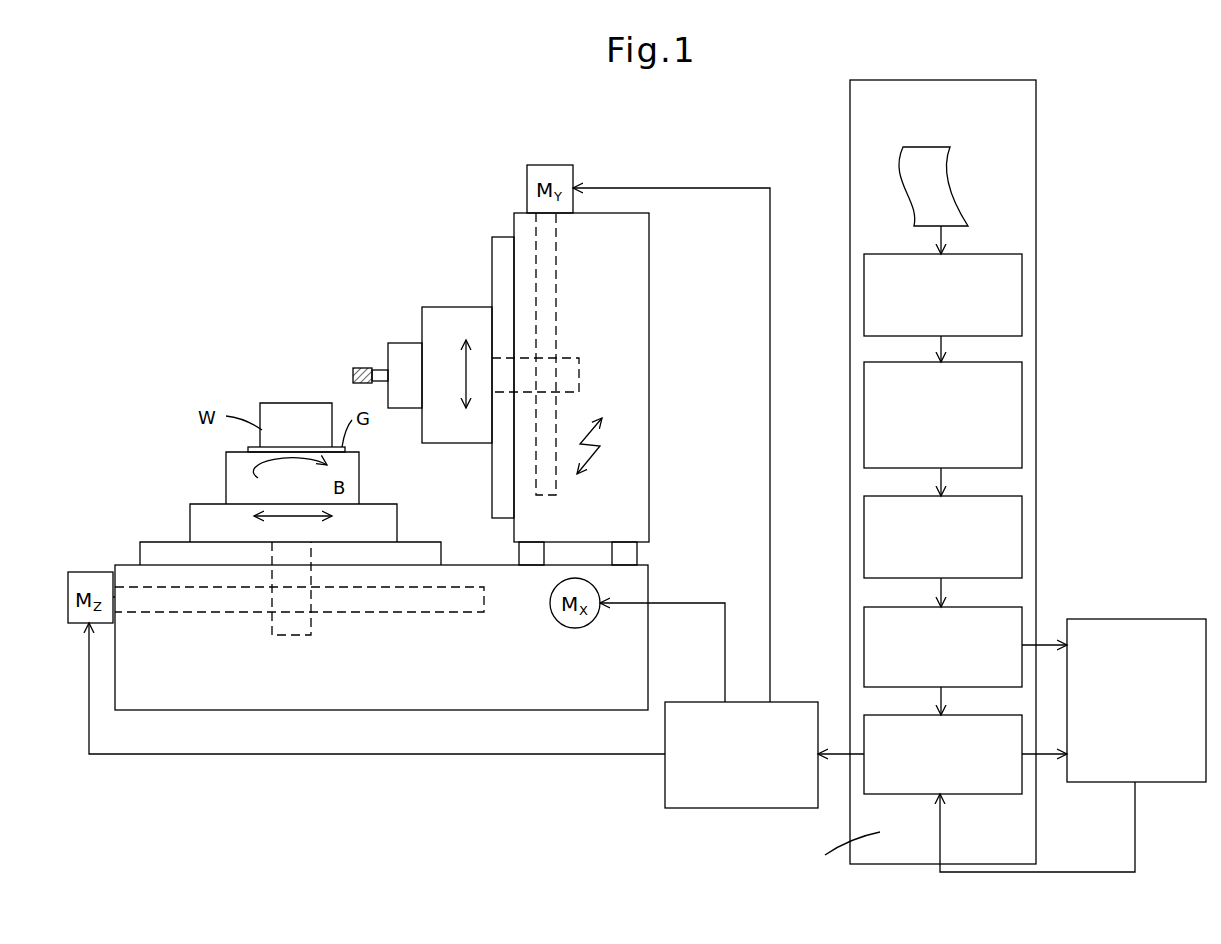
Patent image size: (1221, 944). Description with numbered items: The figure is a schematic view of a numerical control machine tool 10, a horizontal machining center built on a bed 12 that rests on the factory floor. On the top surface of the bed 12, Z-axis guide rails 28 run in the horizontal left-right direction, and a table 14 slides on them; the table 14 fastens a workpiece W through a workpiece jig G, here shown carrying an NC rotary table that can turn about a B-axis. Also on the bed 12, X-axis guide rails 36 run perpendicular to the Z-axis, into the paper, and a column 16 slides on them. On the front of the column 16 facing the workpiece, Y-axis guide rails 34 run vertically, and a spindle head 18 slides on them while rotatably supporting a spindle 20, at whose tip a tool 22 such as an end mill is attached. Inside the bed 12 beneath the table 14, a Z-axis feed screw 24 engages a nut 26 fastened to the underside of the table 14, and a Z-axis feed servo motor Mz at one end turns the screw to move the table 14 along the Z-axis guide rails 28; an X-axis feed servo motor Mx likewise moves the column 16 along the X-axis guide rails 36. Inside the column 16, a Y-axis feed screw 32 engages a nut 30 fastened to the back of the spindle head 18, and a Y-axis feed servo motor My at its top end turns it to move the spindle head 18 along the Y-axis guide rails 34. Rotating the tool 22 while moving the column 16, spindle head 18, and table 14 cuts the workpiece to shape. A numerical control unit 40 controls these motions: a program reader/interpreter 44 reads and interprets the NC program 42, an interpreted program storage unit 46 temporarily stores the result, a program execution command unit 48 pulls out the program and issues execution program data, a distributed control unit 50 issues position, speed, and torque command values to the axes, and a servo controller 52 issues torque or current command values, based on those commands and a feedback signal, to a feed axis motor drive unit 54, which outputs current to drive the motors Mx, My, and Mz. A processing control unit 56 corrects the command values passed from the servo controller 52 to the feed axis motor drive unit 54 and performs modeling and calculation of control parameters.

The numerical control machine tool 10 is at (303, 258).
The bed 12 is at (386, 690).
The table 14 is at (196, 516).
The column 16 is at (640, 292).
The spindle head 18 is at (455, 307).
The spindle 20 is at (396, 343).
The tool 22 is at (362, 368).
The Z-axis feed screw 24 is at (200, 607).
The nut 26 is at (305, 621).
The Z-axis guide rails 28 is at (141, 548).
The nut 30 is at (565, 358).
The Y-axis feed screw 32 is at (556, 256).
The Y-axis guide rails 34 is at (492, 238).
The X-axis guide rails 36 is at (545, 556).
The numerical control unit 40 is at (850, 130).
The NC program 42 is at (950, 172).
The program reader/interpreter 44 is at (1022, 275).
The interpreted program storage unit 46 is at (1022, 383).
The program execution command unit 48 is at (1022, 530).
The distributed control unit 50 is at (1022, 622).
The servo controller 52 is at (1022, 765).
The feed axis motor drive unit 54 is at (665, 787).
The processing control unit 56 is at (1125, 619).